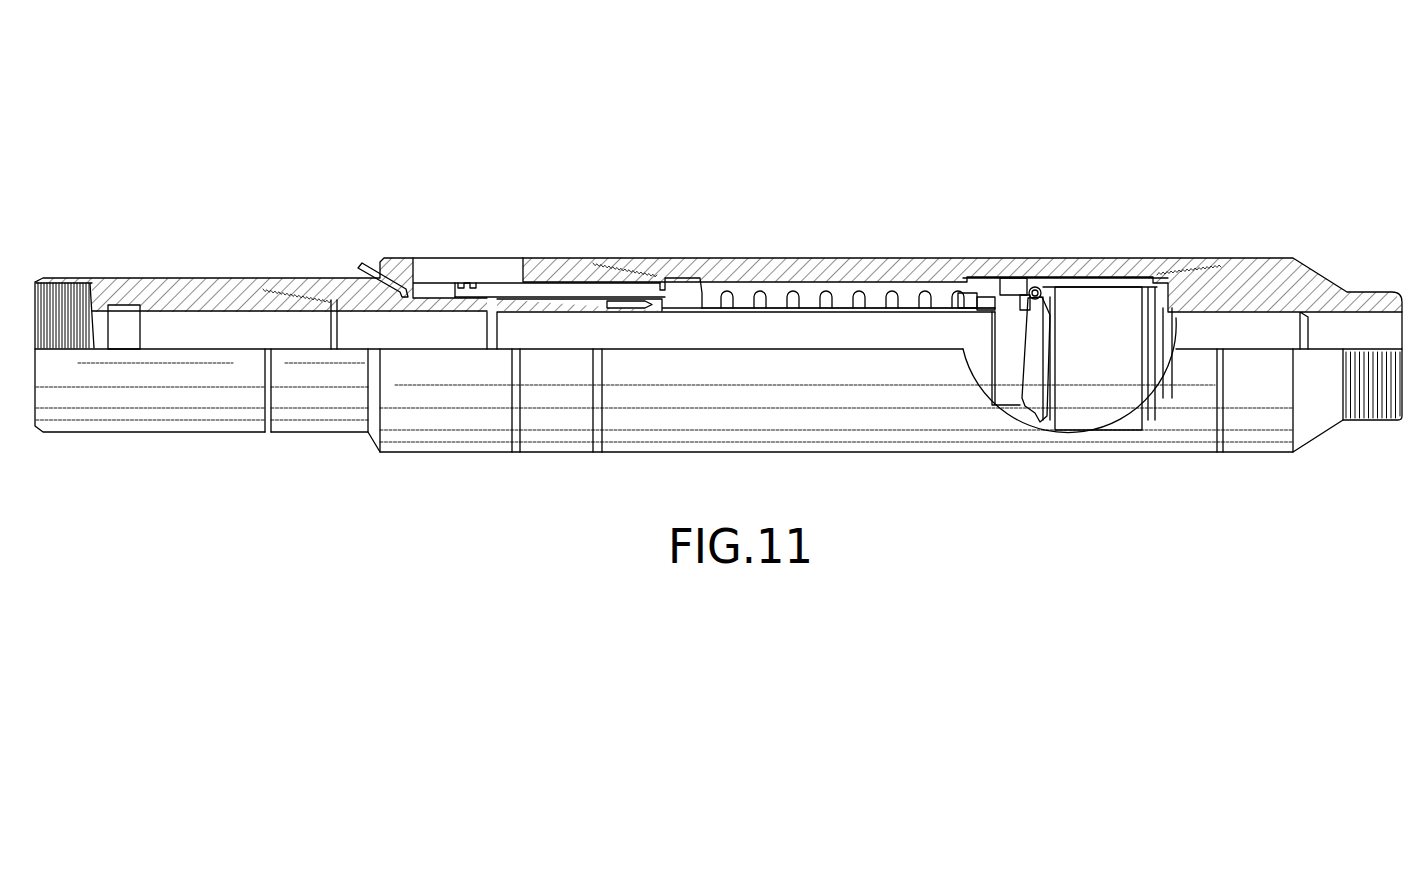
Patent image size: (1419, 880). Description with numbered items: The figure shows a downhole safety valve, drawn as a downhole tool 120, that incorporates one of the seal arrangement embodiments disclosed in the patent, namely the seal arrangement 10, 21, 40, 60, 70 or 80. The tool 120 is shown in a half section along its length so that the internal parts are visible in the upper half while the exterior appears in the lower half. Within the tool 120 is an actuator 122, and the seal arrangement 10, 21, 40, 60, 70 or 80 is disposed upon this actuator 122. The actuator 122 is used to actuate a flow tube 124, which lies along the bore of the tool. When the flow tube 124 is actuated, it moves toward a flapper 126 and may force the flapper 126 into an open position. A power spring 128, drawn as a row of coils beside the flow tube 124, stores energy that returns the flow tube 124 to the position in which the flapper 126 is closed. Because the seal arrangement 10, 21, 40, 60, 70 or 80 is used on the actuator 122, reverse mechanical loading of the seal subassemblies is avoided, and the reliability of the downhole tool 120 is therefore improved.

The seal arrangement 10 is at (468, 285).
The seal arrangement 21 is at (676, 214).
The seal arrangement 40 is at (676, 214).
The seal arrangement 60 is at (676, 214).
The seal arrangement 70 is at (676, 214).
The seal arrangement 80 is at (676, 214).
The downhole tool 120 is at (1006, 147).
The actuator 122 is at (557, 293).
The flow tube 124 is at (680, 300).
The flapper 126 is at (1030, 342).
The power spring 128 is at (795, 302).